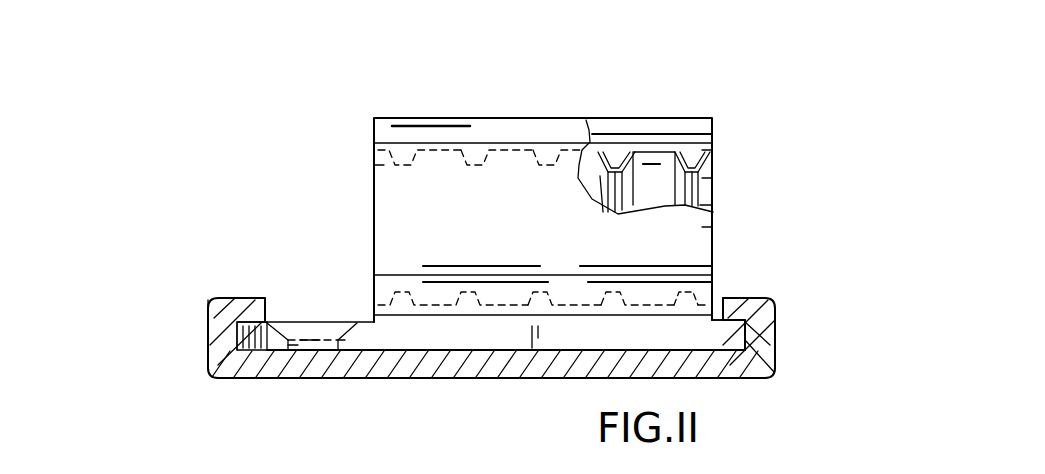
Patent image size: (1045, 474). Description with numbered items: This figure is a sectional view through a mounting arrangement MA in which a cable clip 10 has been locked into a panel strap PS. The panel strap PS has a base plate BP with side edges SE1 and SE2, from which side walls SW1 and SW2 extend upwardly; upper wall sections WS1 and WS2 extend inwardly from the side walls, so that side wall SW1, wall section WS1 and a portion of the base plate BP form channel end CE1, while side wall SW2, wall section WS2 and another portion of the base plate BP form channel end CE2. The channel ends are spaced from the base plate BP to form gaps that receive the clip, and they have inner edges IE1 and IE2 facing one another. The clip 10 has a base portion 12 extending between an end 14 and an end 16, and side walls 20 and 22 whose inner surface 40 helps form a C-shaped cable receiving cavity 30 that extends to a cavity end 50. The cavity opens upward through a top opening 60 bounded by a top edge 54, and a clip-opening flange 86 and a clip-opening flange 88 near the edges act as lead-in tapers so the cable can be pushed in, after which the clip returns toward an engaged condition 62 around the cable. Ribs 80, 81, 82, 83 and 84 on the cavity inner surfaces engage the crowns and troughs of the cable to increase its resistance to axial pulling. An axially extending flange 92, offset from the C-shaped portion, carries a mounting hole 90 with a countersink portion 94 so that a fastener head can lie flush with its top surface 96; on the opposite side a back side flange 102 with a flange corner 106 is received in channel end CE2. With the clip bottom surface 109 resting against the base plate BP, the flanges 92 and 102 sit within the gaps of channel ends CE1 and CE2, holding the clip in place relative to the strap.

The clip 10 is at (728, 195).
The base portion 12 is at (424, 336).
The end 14 is at (240, 340).
The end 16 is at (776, 324).
The side wall 20 is at (713, 178).
The side wall 22 is at (397, 192).
The cable receiving cavity 30 is at (714, 204).
The inner surface 40 is at (713, 165).
The cavity end 50 is at (373, 165).
The top edge 54 is at (663, 133).
The top opening 60 is at (606, 126).
The engaged condition 62 is at (352, 103).
The rib 80 is at (384, 117).
The rib 81 is at (477, 117).
The rib 82 is at (550, 134).
The rib 83 is at (623, 133).
The rib 84 is at (700, 133).
The clip-opening flange 86 is at (681, 120).
The clip-opening flange 88 is at (445, 118).
The mounting hole 90 is at (335, 320).
The axially extending flange 92 is at (265, 342).
The countersink portion 94 is at (295, 325).
The top surface 96 is at (310, 318).
The back side flange 102 is at (730, 340).
The flange corner 106 is at (763, 375).
The clip bottom surface 109 is at (573, 352).
The mounting arrangement MA is at (197, 297).
The base plate BP is at (328, 380).
The upper wall section WS1 is at (260, 297).
The upper wall section WS2 is at (757, 278).
The inner edge IE1 is at (259, 297).
The inner edge IE2 is at (721, 305).
The channel end CE1 is at (209, 352).
The channel end CE2 is at (777, 336).
The side wall SW1 is at (209, 356).
The side wall SW2 is at (777, 341).
The side edge SE1 is at (237, 349).
The side edge SE2 is at (777, 353).
The panel strap PS is at (780, 379).